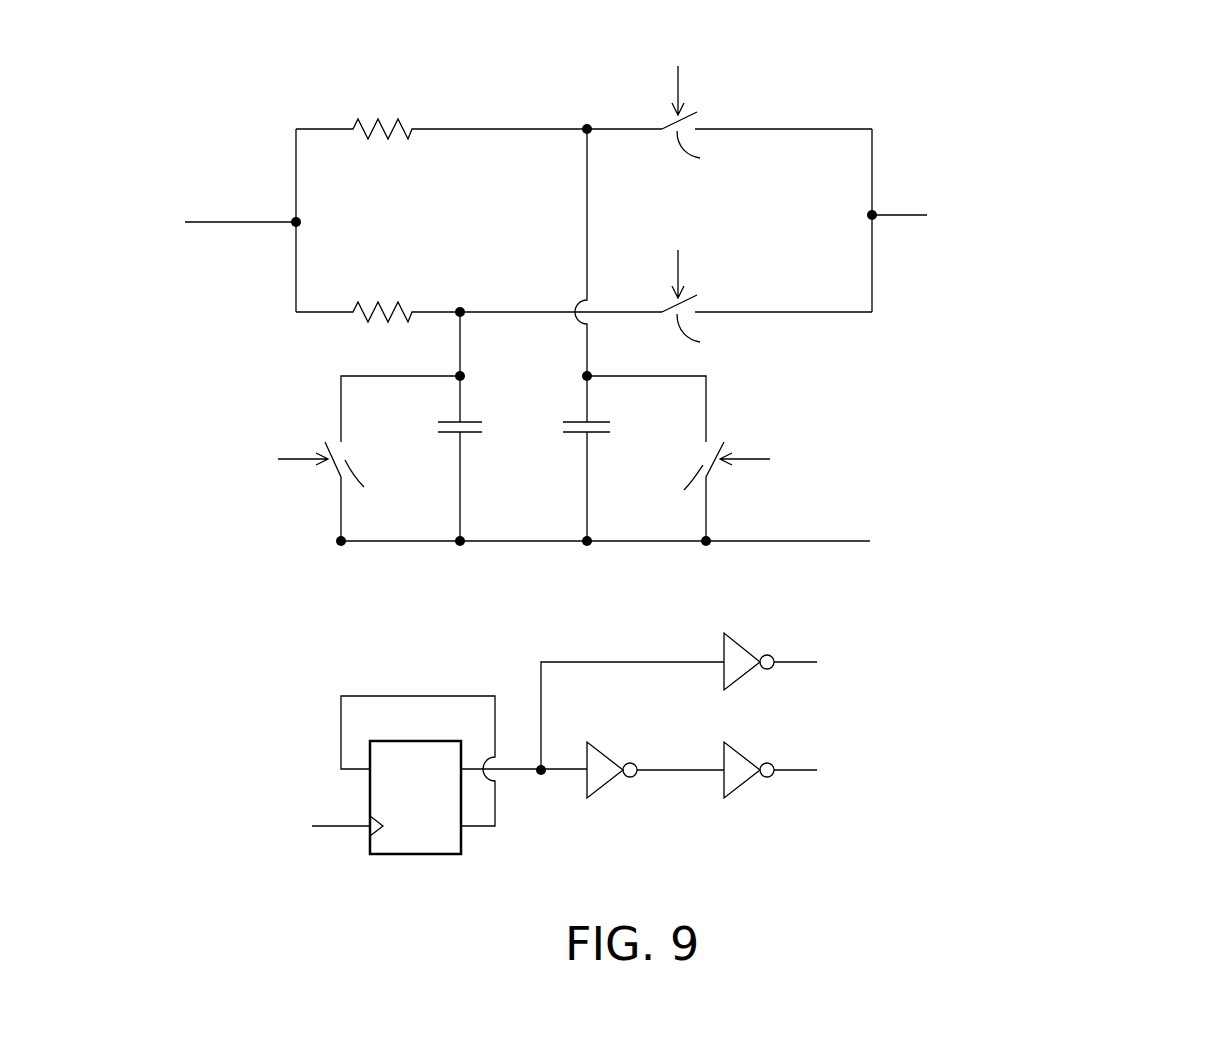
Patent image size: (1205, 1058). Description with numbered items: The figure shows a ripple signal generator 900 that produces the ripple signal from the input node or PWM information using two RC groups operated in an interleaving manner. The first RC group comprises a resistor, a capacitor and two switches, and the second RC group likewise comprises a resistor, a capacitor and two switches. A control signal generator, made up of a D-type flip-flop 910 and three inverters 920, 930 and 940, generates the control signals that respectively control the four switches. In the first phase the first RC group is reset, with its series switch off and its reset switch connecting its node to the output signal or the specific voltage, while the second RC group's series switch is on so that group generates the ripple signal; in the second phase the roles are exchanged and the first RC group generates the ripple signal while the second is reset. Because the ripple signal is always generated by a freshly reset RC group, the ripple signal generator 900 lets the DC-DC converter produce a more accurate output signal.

The ripple signal generator 900 is at (1063, 132).
The D-type flip-flop 910 is at (413, 856).
The inverter 920 is at (605, 785).
The inverter 930 is at (742, 785).
The inverter 940 is at (745, 650).